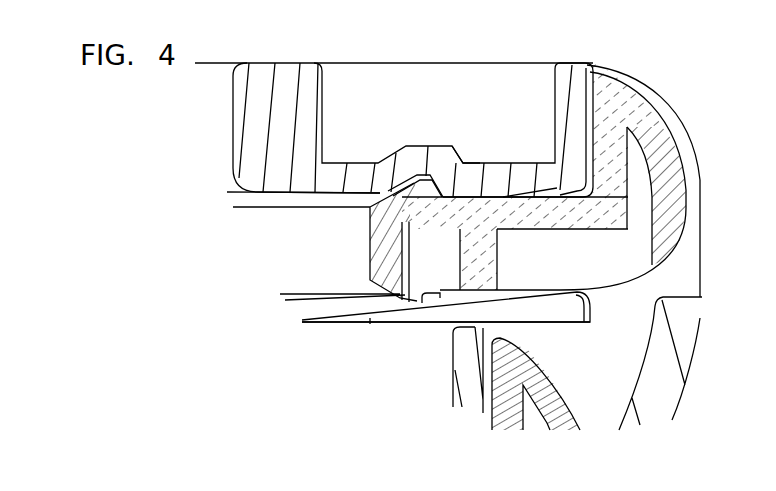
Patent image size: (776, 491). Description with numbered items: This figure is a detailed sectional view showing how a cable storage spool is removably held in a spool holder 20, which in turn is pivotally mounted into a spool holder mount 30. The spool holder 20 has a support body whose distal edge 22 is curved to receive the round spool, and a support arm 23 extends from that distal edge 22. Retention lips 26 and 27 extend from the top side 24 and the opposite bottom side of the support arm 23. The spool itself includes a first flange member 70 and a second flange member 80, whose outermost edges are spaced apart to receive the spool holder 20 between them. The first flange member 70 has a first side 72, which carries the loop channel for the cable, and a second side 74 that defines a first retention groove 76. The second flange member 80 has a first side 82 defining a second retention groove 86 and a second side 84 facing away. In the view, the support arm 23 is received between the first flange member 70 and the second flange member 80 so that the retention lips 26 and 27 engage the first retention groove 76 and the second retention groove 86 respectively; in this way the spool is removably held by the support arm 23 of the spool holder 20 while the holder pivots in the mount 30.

The spool holder 20 is at (660, 148).
The distal edge 22 is at (595, 132).
The support arm 23 is at (522, 213).
The top side 24 is at (548, 196).
The retention lip 26 is at (423, 194).
The retention lip 27 is at (398, 288).
The spool holder mount 30 is at (687, 317).
The first flange member 70 is at (360, 168).
The first side 72 is at (465, 150).
The second side 74 is at (322, 196).
The first retention groove 76 is at (422, 178).
The second flange member 80 is at (357, 305).
The first side 82 is at (314, 290).
The second side 84 is at (316, 330).
The second retention groove 86 is at (425, 298).